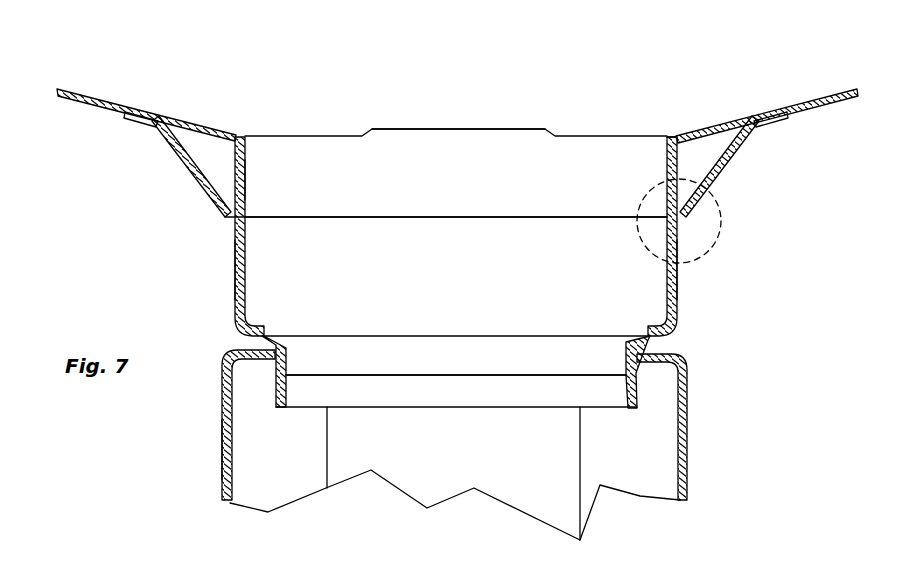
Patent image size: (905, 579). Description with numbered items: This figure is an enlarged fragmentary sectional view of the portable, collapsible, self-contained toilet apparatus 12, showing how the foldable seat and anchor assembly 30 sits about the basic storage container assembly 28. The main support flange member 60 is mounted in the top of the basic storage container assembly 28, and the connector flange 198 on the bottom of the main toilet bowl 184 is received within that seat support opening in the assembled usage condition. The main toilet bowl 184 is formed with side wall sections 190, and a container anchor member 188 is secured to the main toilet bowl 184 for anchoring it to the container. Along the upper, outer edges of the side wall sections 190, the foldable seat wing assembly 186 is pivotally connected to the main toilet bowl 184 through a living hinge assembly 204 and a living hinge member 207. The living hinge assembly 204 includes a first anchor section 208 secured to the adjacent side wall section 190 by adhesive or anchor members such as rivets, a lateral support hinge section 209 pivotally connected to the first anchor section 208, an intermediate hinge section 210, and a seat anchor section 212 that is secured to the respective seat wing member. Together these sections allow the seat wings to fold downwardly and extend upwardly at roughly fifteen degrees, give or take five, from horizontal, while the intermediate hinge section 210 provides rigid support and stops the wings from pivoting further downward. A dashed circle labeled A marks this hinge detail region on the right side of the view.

The portable, collapsible, self-contained toilet apparatus 12 is at (368, 112).
The basic storage container assembly 28 is at (700, 384).
The foldable seat and anchor assembly 30 is at (688, 299).
The main support flange member 60 is at (232, 400).
The main toilet bowl 184 is at (516, 288).
The foldable seat wing assembly 186 is at (70, 93).
The container anchor member 188 is at (454, 128).
The side wall sections 190 is at (243, 157).
The connector flange 198 is at (290, 363).
The living hinge assembly 204 is at (185, 165).
The living hinge member 207 is at (672, 138).
The first anchor section 208 is at (247, 186).
The lateral support hinge section 209 is at (237, 247).
The intermediate hinge section 210 is at (203, 190).
The seat anchor section 212 is at (137, 123).
The detail region A is at (660, 227).